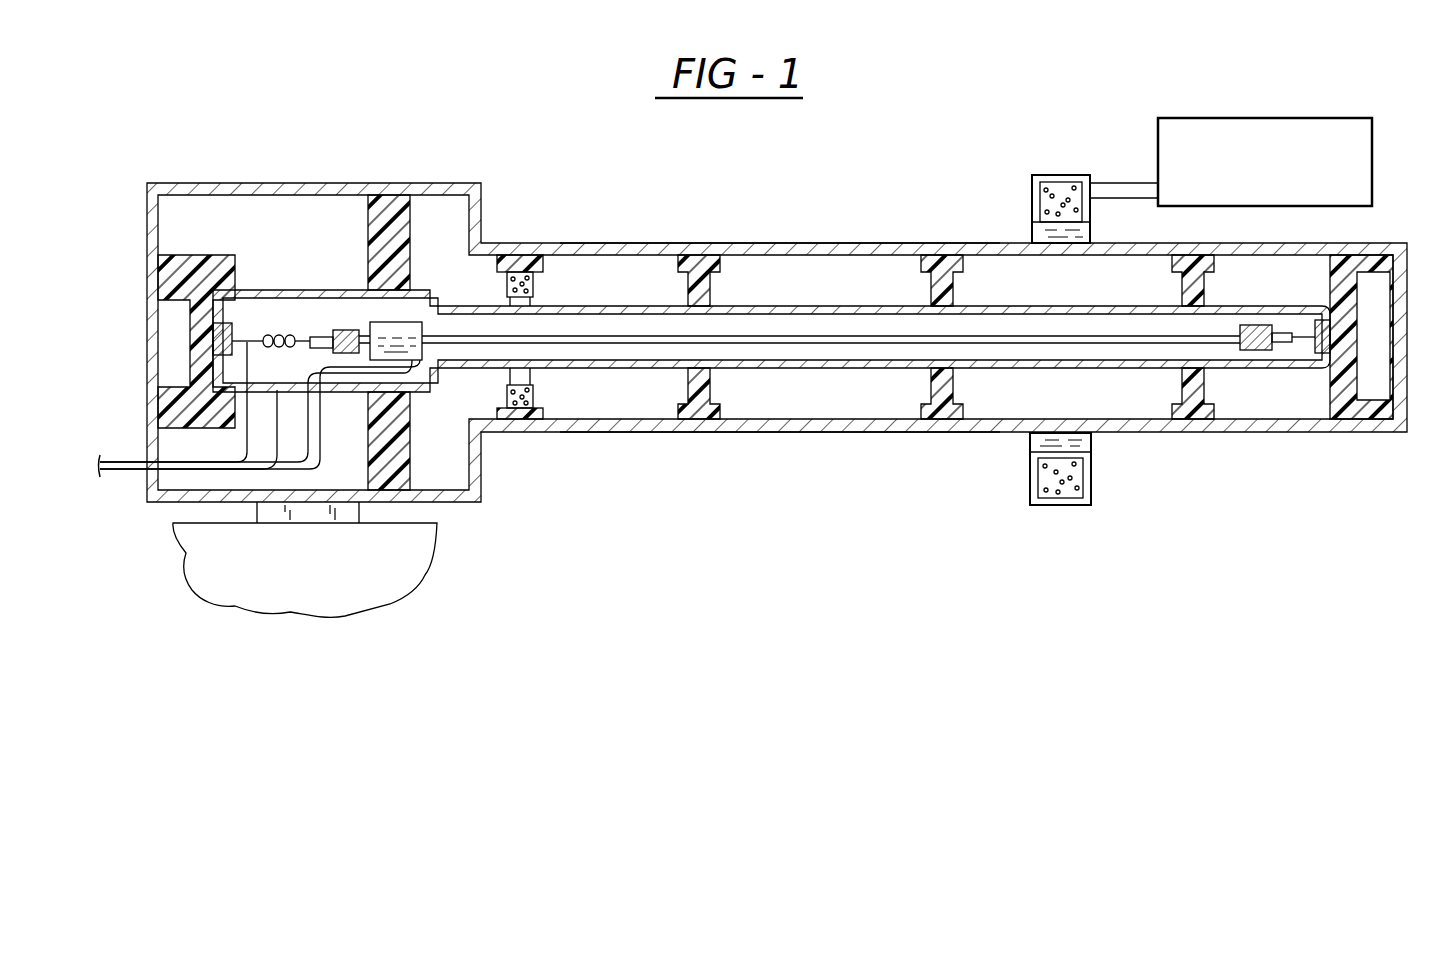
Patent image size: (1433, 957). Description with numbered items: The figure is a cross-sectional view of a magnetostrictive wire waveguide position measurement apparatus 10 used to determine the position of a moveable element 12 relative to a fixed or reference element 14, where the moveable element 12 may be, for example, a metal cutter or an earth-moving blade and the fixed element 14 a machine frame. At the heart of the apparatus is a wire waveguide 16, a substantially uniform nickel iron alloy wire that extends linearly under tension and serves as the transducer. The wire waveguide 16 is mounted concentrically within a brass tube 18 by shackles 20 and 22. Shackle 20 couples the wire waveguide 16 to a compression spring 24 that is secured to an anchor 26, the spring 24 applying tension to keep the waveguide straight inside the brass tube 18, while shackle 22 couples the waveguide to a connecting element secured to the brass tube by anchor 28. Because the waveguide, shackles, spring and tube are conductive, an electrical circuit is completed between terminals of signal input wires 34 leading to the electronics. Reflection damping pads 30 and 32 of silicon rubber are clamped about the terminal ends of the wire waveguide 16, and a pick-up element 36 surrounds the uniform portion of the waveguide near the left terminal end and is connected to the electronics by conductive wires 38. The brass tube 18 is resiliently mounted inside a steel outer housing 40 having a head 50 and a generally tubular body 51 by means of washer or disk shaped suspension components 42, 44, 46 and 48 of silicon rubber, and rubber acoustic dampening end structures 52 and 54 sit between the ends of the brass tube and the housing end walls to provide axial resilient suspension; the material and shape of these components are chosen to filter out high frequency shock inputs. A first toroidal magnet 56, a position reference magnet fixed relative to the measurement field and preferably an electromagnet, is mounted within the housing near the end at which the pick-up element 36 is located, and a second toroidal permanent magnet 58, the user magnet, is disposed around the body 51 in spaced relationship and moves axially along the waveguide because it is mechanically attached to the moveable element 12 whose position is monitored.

The position measurement apparatus 10 is at (862, 178).
The moveable element 12 is at (1303, 118).
The fixed element 14 is at (425, 550).
The wire waveguide 16 is at (893, 345).
The brass tube 18 is at (1085, 306).
The shackle 20 is at (316, 337).
The shackle 22 is at (1286, 343).
The compression spring 24 is at (262, 336).
The anchor 26 is at (200, 338).
The anchor 28 is at (1327, 334).
The reflection damping pad 30 is at (340, 330).
The reflection damping pad 32 is at (1258, 350).
The signal input wires 34 is at (250, 447).
The pick-up element 36 is at (432, 326).
The conductive wires 38 is at (312, 430).
The steel outer housing 40 is at (580, 243).
The suspension component 42 is at (410, 210).
The suspension component 44 is at (686, 284).
The suspension component 46 is at (955, 276).
The suspension component 48 is at (1186, 388).
The head 50 is at (313, 182).
The body 51 is at (773, 432).
The acoustic dampening end structure 52 is at (180, 253).
The acoustic dampening end structure 54 is at (1357, 376).
The first toroidal magnet 56 is at (535, 398).
The second toroidal permanent magnet 58 is at (1052, 175).